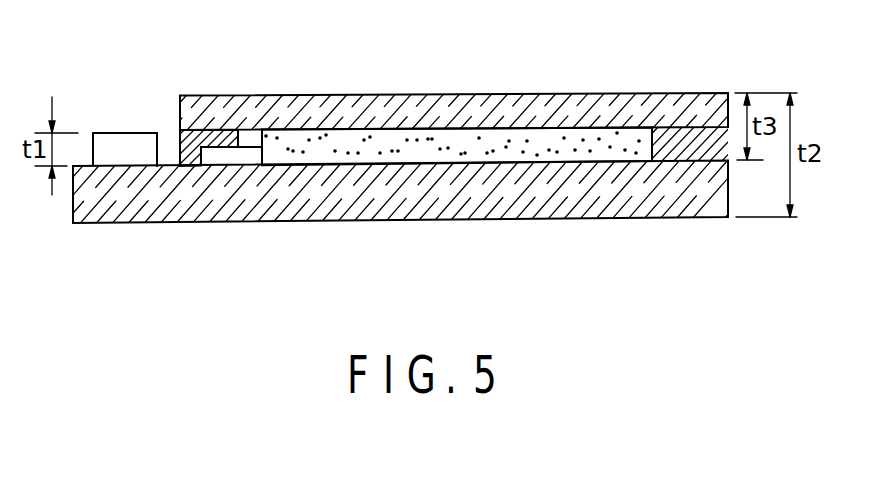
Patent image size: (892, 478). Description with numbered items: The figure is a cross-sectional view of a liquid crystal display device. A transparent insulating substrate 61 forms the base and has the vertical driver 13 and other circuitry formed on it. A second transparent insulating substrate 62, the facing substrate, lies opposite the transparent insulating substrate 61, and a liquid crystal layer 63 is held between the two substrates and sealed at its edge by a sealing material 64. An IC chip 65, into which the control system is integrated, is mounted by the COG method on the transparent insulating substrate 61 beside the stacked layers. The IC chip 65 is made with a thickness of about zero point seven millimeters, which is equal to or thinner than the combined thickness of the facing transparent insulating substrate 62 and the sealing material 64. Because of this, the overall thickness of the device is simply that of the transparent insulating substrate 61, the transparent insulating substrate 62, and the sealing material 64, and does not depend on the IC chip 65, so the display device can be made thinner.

The vertical driver 13 is at (252, 157).
The transparent insulating substrate 61 is at (395, 185).
The transparent insulating substrate (facing substrate) 62 is at (476, 98).
The liquid crystal layer 63 is at (595, 143).
The sealing material 64 is at (195, 148).
The IC chip 65 is at (128, 140).